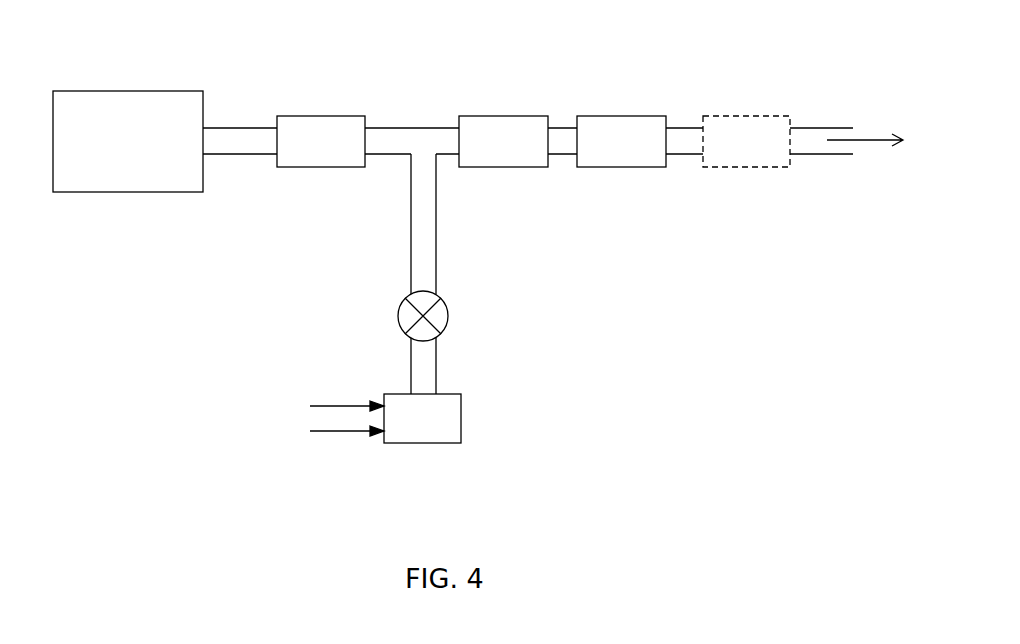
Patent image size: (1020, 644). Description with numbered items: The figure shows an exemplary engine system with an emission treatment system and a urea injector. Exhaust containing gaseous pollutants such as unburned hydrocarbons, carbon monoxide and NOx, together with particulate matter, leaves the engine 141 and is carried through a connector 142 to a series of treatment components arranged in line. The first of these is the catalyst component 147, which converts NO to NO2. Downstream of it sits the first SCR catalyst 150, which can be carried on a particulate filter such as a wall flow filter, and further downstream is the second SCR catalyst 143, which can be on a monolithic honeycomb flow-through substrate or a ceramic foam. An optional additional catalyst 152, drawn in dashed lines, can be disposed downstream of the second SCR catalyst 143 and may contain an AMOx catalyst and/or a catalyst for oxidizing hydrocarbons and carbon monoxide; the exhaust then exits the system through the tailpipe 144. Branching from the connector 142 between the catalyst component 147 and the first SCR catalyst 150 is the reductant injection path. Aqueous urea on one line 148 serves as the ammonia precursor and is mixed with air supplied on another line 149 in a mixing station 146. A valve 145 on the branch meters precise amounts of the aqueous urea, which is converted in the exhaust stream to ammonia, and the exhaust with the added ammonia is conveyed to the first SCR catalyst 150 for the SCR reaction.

The engine 141 is at (90, 194).
The connector 142 is at (240, 128).
The second SCR catalyst 143 is at (618, 168).
The tailpipe 144 is at (870, 138).
The valve 145 is at (448, 317).
The mixing station 146 is at (440, 447).
The catalyst component 147 is at (294, 168).
The line 148 is at (327, 433).
The line 149 is at (318, 405).
The first SCR catalyst 150 is at (475, 168).
The optional additional catalyst 152 is at (725, 168).